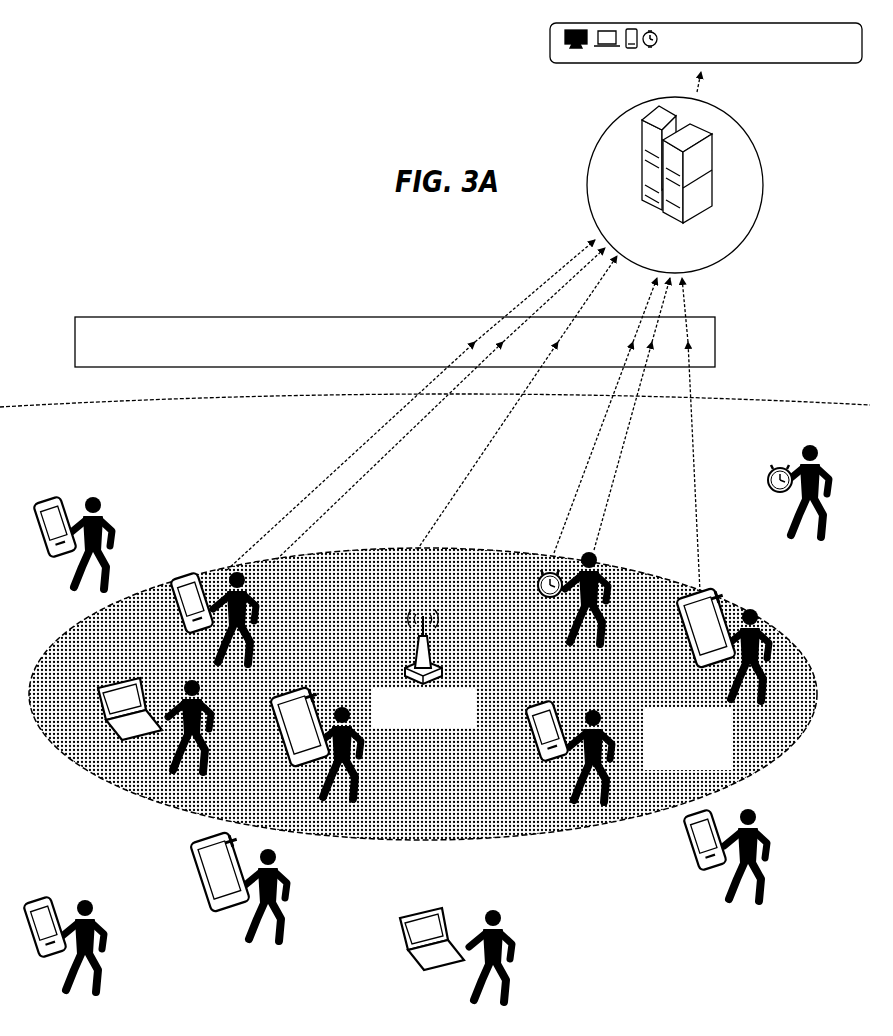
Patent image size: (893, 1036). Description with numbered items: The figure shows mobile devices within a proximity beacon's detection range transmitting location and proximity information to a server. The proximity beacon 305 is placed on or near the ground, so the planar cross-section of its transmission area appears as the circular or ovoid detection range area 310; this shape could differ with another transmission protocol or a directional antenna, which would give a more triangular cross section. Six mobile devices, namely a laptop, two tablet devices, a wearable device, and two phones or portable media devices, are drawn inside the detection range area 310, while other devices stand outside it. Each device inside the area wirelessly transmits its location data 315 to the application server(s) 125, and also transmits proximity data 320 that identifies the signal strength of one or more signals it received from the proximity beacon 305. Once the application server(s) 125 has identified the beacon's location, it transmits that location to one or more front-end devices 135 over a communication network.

The front-end device 135 is at (706, 43).
The application server 125 is at (675, 172).
The location data 315 is at (395, 342).
The proximity data 320 is at (460, 416).
The proximity beacon 305 is at (424, 669).
The detection range area 310 is at (423, 694).